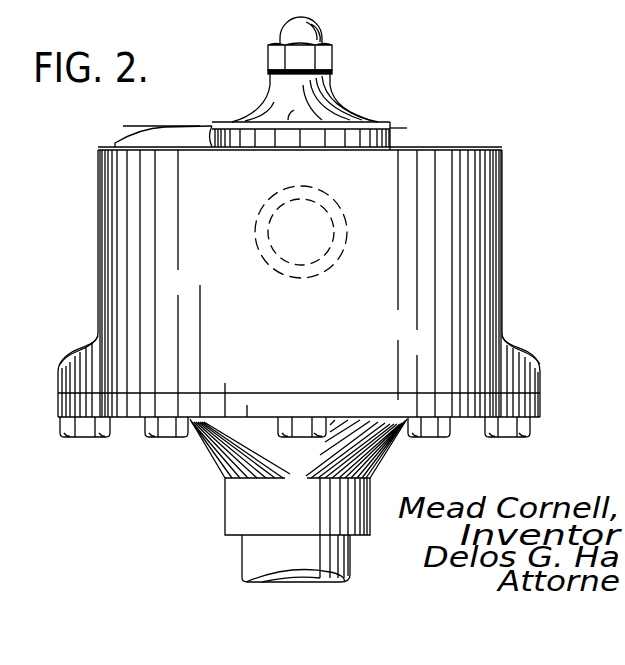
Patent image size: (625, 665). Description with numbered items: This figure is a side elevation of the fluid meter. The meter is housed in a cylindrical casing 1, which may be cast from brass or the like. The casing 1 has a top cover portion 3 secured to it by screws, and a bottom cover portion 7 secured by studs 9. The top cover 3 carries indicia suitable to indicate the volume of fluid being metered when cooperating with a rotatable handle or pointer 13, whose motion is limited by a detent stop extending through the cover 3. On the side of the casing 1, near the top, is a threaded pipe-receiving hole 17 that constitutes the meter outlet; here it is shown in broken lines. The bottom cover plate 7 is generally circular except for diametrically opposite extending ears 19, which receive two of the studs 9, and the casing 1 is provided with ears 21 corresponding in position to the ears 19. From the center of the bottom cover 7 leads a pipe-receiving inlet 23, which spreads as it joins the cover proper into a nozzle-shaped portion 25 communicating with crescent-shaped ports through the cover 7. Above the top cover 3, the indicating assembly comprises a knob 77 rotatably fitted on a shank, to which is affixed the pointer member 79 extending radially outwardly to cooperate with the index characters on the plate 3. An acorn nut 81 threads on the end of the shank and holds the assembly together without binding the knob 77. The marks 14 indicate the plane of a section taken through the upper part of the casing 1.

The cylindrical casing 1 is at (490, 236).
The top cover portion 3 is at (418, 150).
The bottom cover portion 7 is at (72, 403).
The studs 9 is at (150, 437).
The rotatable handle or pointer 13 is at (182, 134).
The section plane 14 is at (127, 134).
The threaded pipe-receiving hole 17 is at (327, 215).
The ears 19 is at (65, 409).
The ears 21 is at (72, 366).
The pipe-receiving inlet 23 is at (268, 526).
The nozzle-shaped portion 25 is at (212, 446).
The knob 77 is at (268, 100).
The pointer member 79 is at (202, 117).
The acorn nut 81 is at (318, 42).